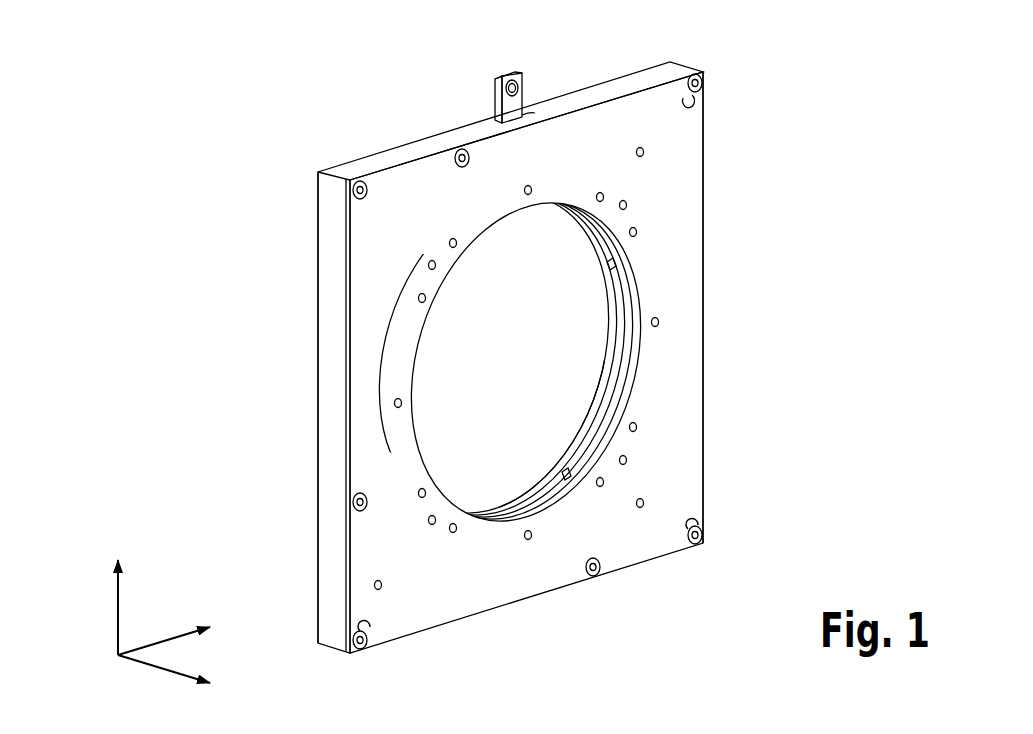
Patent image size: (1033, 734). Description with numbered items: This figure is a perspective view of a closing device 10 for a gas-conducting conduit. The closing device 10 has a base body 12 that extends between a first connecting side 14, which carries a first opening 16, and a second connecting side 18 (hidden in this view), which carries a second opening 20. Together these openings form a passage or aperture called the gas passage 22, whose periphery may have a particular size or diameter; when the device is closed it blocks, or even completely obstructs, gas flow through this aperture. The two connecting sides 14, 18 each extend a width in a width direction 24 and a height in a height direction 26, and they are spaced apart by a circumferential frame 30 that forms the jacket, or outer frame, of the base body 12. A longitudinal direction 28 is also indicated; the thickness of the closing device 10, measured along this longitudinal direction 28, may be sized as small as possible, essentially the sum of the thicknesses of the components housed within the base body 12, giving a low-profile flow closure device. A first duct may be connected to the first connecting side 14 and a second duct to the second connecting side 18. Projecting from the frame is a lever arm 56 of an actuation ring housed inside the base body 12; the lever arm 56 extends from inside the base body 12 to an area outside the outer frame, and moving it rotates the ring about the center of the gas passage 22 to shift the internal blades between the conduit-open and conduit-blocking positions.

The closing device 10 is at (772, 138).
The base body 12 is at (280, 223).
The first connecting side 14 is at (732, 440).
The first opening 16 is at (566, 364).
The second connecting side 18 is at (342, 143).
The second opening 20 is at (497, 273).
The gas passage 22 is at (530, 366).
The width direction 24 is at (167, 638).
The height direction 26 is at (118, 615).
The longitudinal direction 28 is at (147, 668).
The circumferential frame 30 is at (332, 396).
The lever arm 56 is at (530, 102).